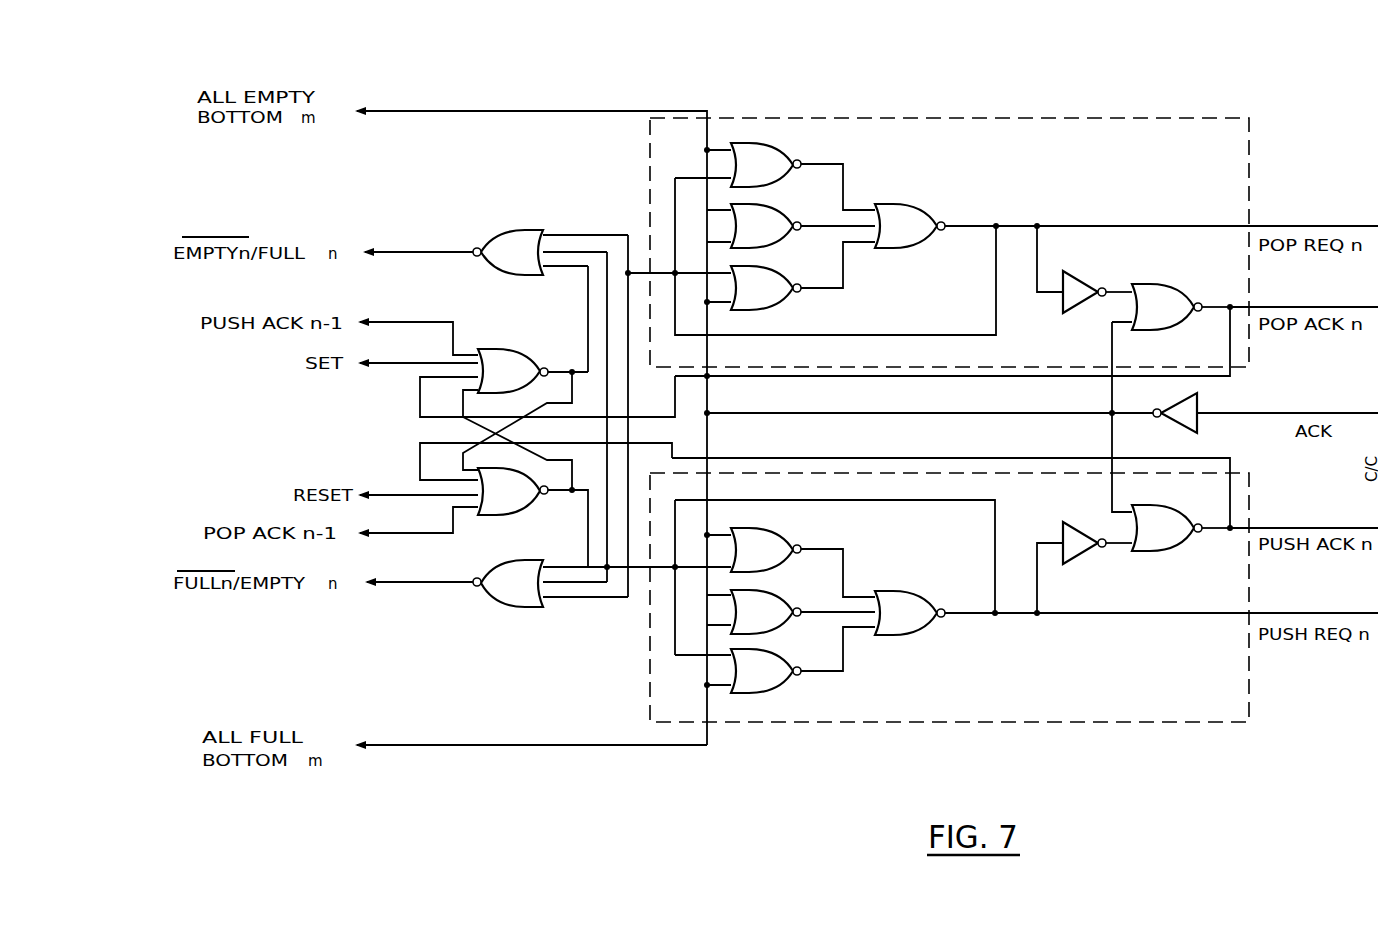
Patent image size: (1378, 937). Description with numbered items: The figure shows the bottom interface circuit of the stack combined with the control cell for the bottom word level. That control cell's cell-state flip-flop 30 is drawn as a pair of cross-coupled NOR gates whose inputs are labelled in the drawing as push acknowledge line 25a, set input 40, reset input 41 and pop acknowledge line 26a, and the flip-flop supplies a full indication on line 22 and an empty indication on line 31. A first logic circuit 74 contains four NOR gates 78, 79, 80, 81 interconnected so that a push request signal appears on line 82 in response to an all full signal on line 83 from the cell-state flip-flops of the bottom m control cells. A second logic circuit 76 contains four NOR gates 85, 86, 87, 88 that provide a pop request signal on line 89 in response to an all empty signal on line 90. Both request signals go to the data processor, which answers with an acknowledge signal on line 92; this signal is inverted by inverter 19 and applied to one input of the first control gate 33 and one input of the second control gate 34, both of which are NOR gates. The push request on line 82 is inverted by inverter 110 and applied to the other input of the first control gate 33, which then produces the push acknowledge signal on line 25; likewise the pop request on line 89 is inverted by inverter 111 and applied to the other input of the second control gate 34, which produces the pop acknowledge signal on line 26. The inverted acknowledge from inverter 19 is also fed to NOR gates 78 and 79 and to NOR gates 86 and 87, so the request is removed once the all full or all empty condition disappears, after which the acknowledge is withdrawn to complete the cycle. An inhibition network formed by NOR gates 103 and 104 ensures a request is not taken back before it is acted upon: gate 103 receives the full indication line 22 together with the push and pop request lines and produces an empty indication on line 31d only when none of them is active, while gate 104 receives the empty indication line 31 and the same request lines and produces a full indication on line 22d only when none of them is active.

The all empty signal line 90 is at (468, 109).
The all full signal line 83 is at (410, 745).
The second NOR gate 104 is at (515, 228).
The first NOR gate 103 is at (514, 569).
The full indication line 22d is at (398, 254).
The empty indication line 31d is at (382, 583).
The cell-state flip-flop 30 is at (534, 356).
The full indication line 22 is at (589, 530).
The empty indication line 31 is at (589, 302).
The PUSH ACK n-1 line 25a is at (375, 322).
The SET line 40 is at (375, 364).
The RESET line 41 is at (407, 494).
The POP ACK n-1 line 26a is at (374, 534).
The second logic circuit 76 is at (1295, 141).
The first logic circuit 74 is at (1290, 698).
The NOR gate 85 is at (787, 133).
The NOR gate 86 is at (788, 188).
The NOR gate 87 is at (790, 257).
The NOR gate 88 is at (924, 190).
The pop request line 89 is at (1341, 225).
The inverter 111 is at (1116, 264).
The second control gate 34 is at (1184, 276).
The pop acknowledge line 26 is at (1341, 305).
The inverter 19 is at (1170, 410).
The acknowledge signal line 92 is at (1343, 413).
The NOR gate 78 is at (784, 520).
The NOR gate 79 is at (784, 581).
The NOR gate 80 is at (787, 641).
The NOR gate 81 is at (924, 584).
The push request line 82 is at (1333, 610).
The inverter 110 is at (1108, 514).
The first control gate 33 is at (1184, 499).
The push acknowledge line 25 is at (1333, 526).